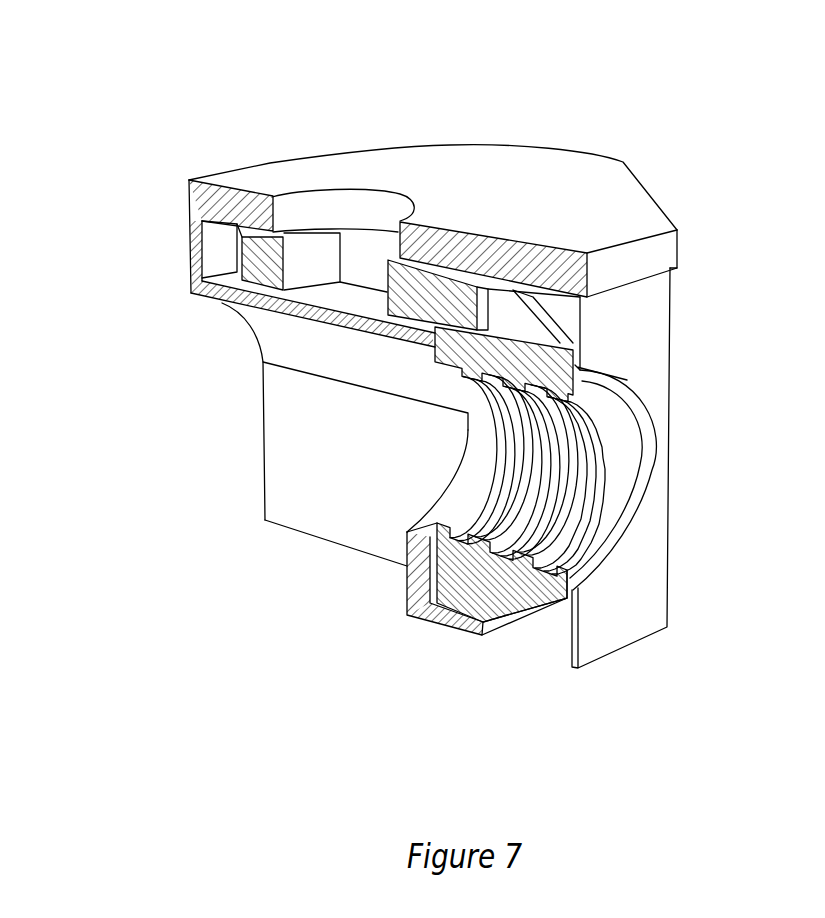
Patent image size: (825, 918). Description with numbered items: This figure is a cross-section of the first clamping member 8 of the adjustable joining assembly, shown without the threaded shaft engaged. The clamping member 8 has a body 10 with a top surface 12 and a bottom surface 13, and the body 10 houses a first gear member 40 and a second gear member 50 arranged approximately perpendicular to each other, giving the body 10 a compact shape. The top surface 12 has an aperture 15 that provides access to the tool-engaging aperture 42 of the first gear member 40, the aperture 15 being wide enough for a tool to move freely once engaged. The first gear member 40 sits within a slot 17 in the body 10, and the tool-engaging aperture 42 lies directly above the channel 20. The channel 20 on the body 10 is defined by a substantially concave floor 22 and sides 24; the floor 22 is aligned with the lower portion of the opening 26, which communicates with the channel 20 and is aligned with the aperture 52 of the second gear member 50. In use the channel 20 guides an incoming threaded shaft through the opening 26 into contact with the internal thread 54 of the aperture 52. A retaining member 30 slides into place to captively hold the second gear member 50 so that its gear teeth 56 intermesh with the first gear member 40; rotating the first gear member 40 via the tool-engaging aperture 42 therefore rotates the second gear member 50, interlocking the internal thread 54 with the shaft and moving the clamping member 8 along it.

The first clamping member 8 is at (690, 148).
The body 10 is at (271, 163).
The top surface 12 is at (643, 207).
The bottom surface 13 is at (457, 632).
The aperture 15 is at (397, 207).
The slot 17 is at (212, 237).
The channel 20 is at (233, 423).
The floor 22 is at (222, 303).
The sides 24 is at (283, 493).
The opening 26 is at (425, 511).
The retaining member 30 is at (630, 587).
The first gear member 40 is at (207, 270).
The tool-engaging aperture 42 is at (350, 247).
The second gear member 50 is at (585, 372).
The aperture 52 is at (600, 478).
The internal thread 54 is at (565, 515).
The gear teeth 56 is at (507, 323).